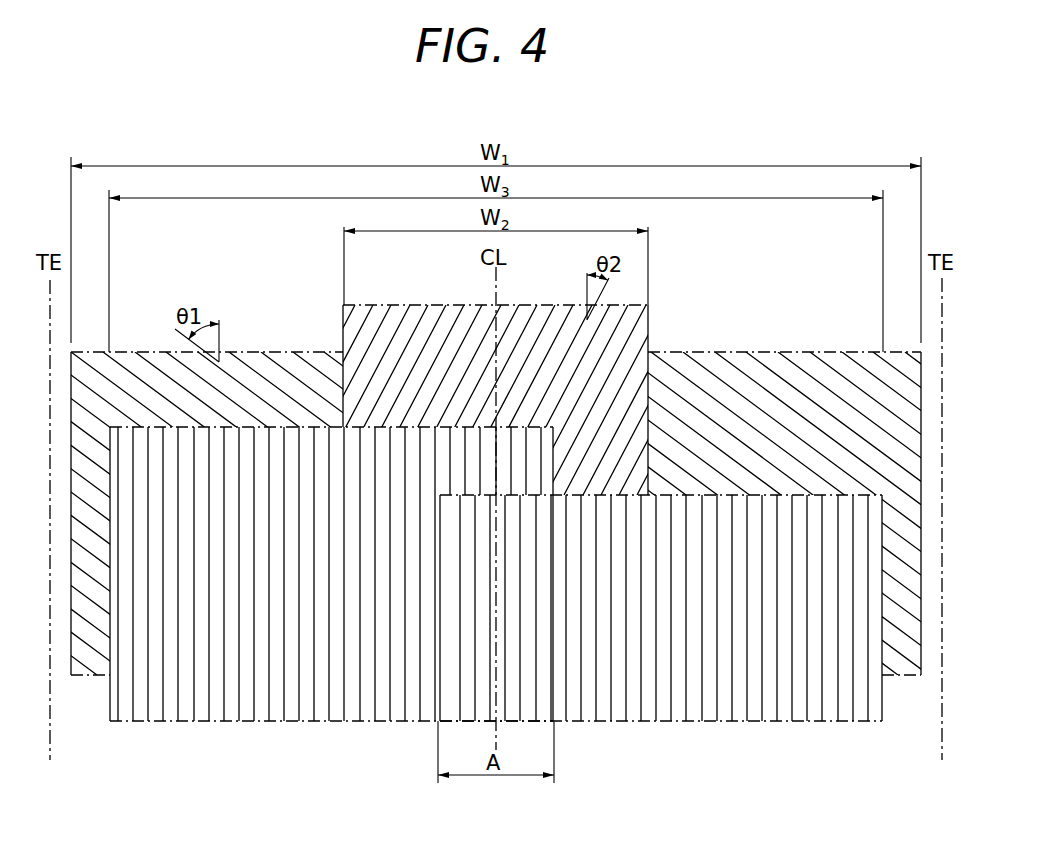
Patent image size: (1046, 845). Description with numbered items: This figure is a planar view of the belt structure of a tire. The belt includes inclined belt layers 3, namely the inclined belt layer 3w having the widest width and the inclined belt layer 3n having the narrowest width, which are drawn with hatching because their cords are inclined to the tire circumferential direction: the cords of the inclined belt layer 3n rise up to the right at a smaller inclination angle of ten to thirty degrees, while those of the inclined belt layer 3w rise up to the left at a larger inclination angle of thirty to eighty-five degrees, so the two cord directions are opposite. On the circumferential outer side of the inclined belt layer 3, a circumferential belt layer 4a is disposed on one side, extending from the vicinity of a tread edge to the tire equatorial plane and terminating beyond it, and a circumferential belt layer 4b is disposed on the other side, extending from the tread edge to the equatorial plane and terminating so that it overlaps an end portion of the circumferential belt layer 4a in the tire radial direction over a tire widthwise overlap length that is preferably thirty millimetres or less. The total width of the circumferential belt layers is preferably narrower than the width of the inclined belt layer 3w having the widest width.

The inclined belt layer 3 is at (496, 490).
The inclined belt layer having narrowest width 3n is at (425, 320).
The inclined belt layer having widest width 3w is at (787, 368).
The circumferential belt layer 4a is at (275, 698).
The circumferential belt layer 4b is at (694, 702).